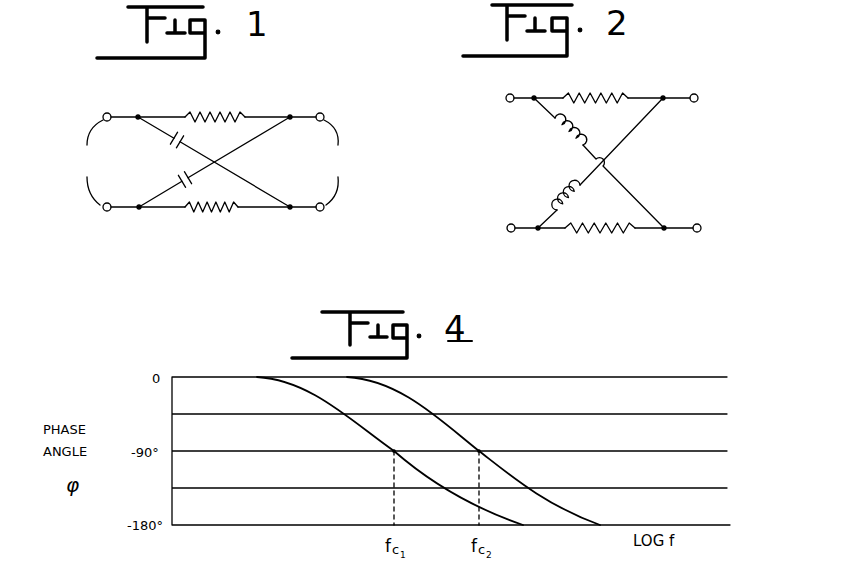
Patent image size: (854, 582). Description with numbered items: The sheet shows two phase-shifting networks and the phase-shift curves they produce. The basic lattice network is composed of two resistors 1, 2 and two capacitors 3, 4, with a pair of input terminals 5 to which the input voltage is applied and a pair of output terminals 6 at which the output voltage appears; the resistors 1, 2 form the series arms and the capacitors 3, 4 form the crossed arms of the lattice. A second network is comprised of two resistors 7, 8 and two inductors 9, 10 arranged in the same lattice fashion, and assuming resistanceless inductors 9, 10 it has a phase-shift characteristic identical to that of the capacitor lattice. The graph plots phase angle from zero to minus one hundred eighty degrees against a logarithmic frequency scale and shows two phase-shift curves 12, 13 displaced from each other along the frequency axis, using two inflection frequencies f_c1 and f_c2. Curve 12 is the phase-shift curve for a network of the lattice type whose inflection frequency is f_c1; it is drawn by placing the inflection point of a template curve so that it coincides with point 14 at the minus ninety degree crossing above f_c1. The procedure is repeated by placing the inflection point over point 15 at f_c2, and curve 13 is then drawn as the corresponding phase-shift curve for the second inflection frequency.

In FIG. 1, the resistor 1 is at (230, 112).
In FIG. 1, the resistor 2 is at (226, 215).
In FIG. 1, the capacitor 3 is at (187, 145).
In FIG. 1, the capacitor 4 is at (192, 177).
In FIG. 1, the input terminals 5 is at (91, 162).
In FIG. 1, the output terminals 6 is at (331, 162).
In FIG. 2, the resistor 7 is at (598, 96).
In FIG. 2, the resistor 8 is at (623, 235).
In FIG. 2, the inductor 9 is at (557, 139).
In FIG. 2, the inductor 10 is at (565, 191).
In FIG. 4, the phase-shift curve 12 is at (351, 424).
In FIG. 4, the phase-shift curve 13 is at (397, 390).
In FIG. 4, the point 14 is at (392, 453).
In FIG. 4, the point 15 is at (481, 451).